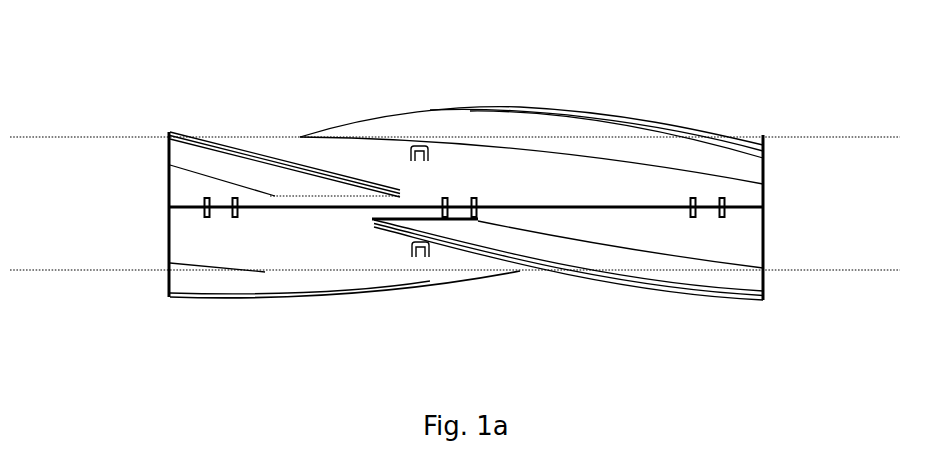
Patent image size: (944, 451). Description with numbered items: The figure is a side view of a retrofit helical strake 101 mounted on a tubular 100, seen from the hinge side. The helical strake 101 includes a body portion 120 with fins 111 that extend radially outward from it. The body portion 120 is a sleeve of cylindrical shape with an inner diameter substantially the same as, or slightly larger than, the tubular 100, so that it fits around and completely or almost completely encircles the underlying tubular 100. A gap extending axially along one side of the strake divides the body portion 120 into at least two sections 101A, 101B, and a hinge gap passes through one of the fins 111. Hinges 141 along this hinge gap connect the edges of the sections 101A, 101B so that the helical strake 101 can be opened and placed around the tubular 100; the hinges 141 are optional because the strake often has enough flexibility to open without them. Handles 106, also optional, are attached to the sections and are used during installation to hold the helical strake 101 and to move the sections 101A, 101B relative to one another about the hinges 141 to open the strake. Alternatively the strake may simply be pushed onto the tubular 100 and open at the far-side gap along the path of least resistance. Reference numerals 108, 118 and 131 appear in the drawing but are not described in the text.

The tubular 100 is at (130, 137).
The helical strake 101 is at (229, 313).
The first section of the helical strake 101A is at (458, 137).
The second section of the helical strake 101B is at (478, 273).
The handles 106 is at (411, 258).
The upper retaining clip 108 is at (408, 146).
The fins 111 is at (335, 130).
The support bar 118 is at (370, 216).
The body portion 120 is at (764, 234).
The central divider 131 is at (767, 197).
The hinges 141 is at (693, 194).